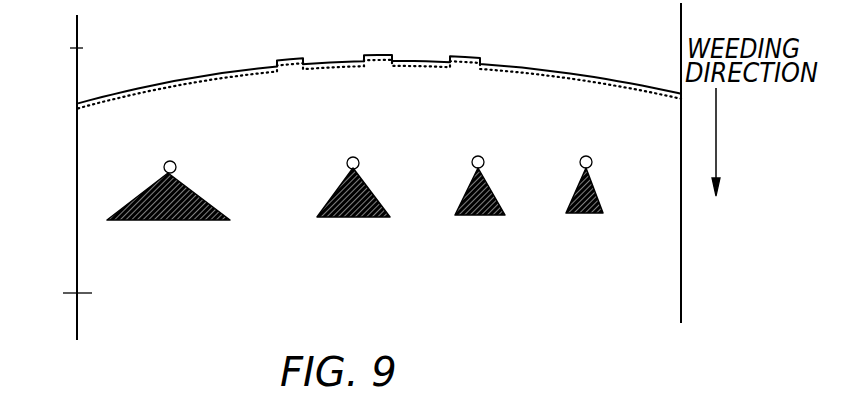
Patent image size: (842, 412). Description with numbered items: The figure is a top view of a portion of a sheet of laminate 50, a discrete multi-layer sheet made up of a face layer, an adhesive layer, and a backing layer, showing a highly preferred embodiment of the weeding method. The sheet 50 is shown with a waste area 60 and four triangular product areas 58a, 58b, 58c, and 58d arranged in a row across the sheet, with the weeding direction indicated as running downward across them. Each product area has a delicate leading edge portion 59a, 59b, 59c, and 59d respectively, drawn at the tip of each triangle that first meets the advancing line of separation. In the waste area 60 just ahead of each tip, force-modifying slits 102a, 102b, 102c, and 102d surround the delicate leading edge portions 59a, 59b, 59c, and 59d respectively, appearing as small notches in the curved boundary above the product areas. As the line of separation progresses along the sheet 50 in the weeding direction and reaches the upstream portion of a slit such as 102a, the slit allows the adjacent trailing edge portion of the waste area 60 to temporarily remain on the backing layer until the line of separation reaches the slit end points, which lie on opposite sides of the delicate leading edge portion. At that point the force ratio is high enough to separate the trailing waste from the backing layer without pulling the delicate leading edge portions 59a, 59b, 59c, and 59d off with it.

The laminate sheet 50 is at (59, 48).
The waste area 60 is at (60, 295).
The product area 58a is at (172, 220).
The product area 58b is at (335, 217).
The product area 58c is at (468, 215).
The product area 58d is at (578, 213).
The delicate leading edge portion 59a is at (177, 173).
The delicate leading edge portion 59b is at (360, 171).
The delicate leading edge portion 59c is at (485, 170).
The delicate leading edge portion 59d is at (593, 170).
The force-modifying slit 102a is at (171, 161).
The force-modifying slit 102b is at (353, 157).
The force-modifying slit 102c is at (479, 156).
The force-modifying slit 102d is at (587, 156).